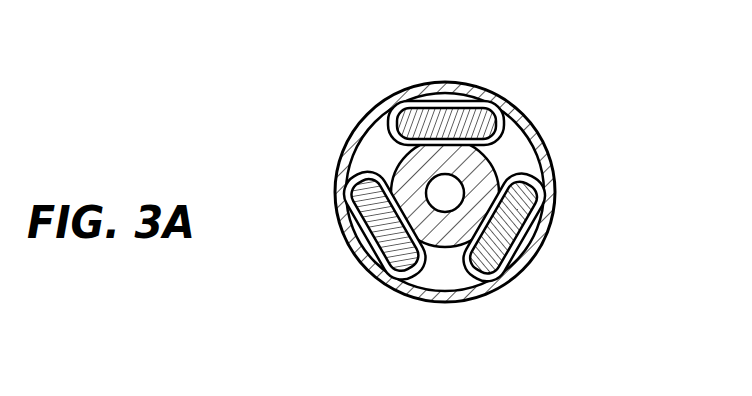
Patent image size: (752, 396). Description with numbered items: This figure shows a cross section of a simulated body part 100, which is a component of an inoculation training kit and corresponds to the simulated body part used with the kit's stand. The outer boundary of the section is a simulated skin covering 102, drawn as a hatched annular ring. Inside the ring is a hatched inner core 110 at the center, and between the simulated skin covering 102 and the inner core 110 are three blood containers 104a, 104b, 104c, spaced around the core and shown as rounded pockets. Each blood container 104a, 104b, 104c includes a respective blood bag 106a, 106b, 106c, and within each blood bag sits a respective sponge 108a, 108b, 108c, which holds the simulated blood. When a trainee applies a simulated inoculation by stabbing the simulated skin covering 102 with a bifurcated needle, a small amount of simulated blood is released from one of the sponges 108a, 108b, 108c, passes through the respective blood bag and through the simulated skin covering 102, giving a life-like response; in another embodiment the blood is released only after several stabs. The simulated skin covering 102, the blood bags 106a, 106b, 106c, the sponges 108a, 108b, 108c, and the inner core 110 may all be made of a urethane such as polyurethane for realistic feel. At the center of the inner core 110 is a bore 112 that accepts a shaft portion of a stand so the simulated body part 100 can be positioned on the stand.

The simulated body part 100 is at (535, 124).
The simulated skin covering 102 is at (545, 160).
The blood container 104a is at (505, 108).
The blood container 104b is at (552, 162).
The blood container 104c is at (356, 188).
The blood bag 106a is at (390, 126).
The blood bag 106b is at (523, 248).
The blood bag 106c is at (355, 255).
The sponge 108a is at (423, 113).
The sponge 108b is at (507, 208).
The sponge 108c is at (376, 275).
The inner core 110 is at (395, 163).
The bore 112 is at (446, 196).